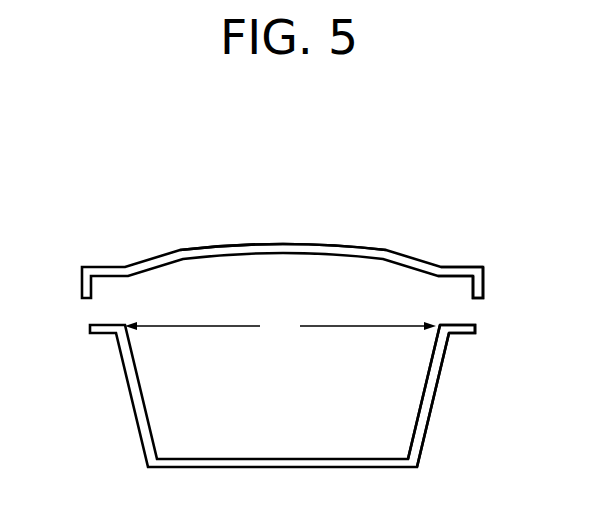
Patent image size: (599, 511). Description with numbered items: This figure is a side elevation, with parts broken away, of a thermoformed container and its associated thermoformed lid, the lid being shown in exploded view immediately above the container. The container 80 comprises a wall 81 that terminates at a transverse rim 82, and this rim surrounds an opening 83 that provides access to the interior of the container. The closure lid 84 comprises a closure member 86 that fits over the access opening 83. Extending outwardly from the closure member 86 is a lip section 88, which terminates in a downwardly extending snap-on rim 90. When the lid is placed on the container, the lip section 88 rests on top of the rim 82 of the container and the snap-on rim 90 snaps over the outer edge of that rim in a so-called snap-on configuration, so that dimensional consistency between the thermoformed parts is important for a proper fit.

The container 80 is at (102, 412).
The wall 81 is at (434, 406).
The transverse rim 82 is at (478, 331).
The opening 83 is at (280, 328).
The closure lid 84 is at (400, 224).
The closure member 86 is at (283, 243).
The lip section 88 is at (472, 267).
The snap-on rim 90 is at (485, 287).